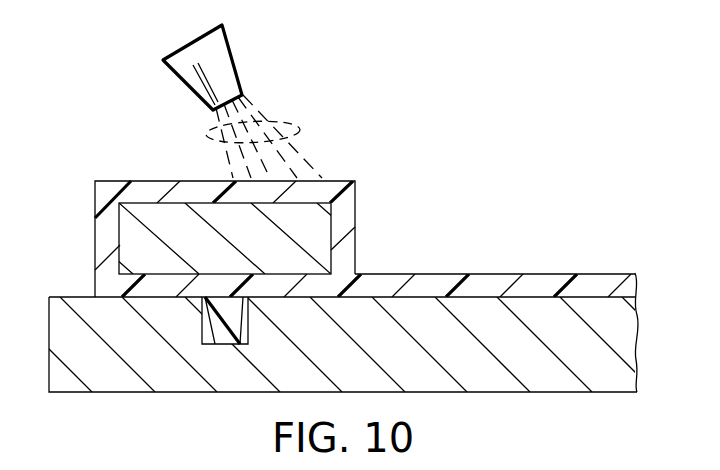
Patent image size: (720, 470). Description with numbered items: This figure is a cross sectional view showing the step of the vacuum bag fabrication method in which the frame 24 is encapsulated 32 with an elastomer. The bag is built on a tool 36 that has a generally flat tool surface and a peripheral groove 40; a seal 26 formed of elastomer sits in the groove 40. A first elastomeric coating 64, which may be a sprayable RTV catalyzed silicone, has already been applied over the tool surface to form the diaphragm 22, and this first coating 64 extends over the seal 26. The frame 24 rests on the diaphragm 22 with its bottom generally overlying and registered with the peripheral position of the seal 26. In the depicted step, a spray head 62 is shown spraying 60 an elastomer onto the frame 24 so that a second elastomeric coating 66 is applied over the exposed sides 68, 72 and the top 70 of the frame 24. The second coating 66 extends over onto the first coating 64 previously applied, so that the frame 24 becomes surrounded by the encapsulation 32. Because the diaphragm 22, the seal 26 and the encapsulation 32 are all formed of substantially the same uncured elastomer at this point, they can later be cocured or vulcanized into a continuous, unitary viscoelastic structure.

The diaphragm 22 is at (443, 282).
The frame 24 is at (153, 213).
The seal 26 is at (222, 327).
The encapsulation 32 is at (225, 204).
The tool 36 is at (497, 383).
The peripheral groove 40 is at (240, 326).
The spraying 60 is at (293, 123).
The spray head 62 is at (235, 58).
The first elastomeric coating 64 is at (542, 273).
The second elastomeric coating 66 is at (332, 178).
The exposed side of frame 68 is at (332, 237).
The top of frame 70 is at (207, 203).
The exposed side of frame 72 is at (120, 240).